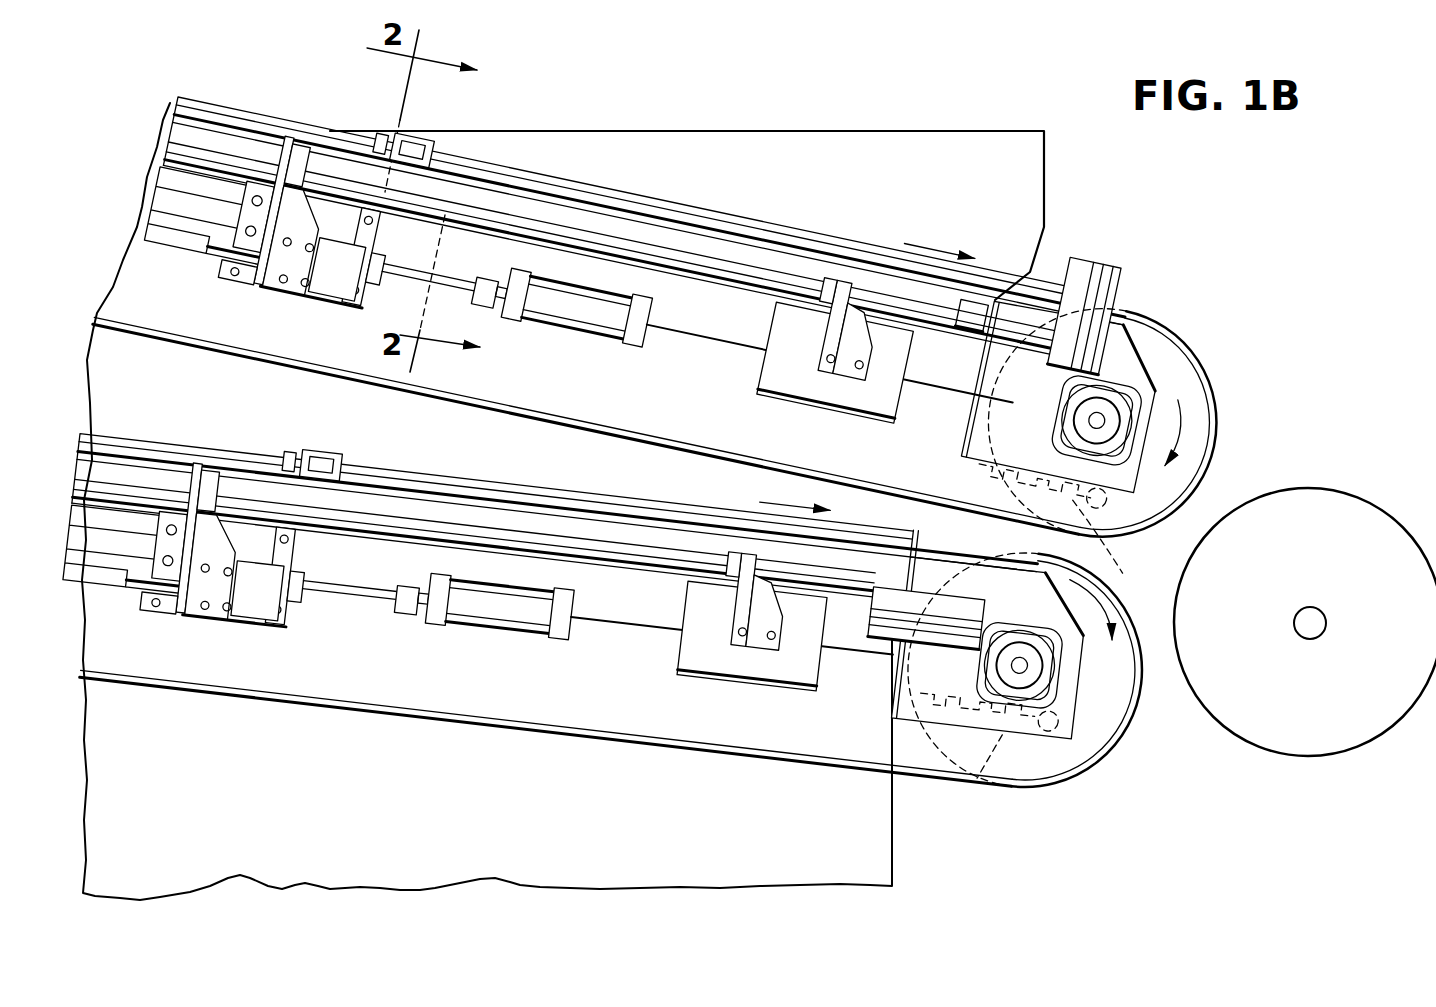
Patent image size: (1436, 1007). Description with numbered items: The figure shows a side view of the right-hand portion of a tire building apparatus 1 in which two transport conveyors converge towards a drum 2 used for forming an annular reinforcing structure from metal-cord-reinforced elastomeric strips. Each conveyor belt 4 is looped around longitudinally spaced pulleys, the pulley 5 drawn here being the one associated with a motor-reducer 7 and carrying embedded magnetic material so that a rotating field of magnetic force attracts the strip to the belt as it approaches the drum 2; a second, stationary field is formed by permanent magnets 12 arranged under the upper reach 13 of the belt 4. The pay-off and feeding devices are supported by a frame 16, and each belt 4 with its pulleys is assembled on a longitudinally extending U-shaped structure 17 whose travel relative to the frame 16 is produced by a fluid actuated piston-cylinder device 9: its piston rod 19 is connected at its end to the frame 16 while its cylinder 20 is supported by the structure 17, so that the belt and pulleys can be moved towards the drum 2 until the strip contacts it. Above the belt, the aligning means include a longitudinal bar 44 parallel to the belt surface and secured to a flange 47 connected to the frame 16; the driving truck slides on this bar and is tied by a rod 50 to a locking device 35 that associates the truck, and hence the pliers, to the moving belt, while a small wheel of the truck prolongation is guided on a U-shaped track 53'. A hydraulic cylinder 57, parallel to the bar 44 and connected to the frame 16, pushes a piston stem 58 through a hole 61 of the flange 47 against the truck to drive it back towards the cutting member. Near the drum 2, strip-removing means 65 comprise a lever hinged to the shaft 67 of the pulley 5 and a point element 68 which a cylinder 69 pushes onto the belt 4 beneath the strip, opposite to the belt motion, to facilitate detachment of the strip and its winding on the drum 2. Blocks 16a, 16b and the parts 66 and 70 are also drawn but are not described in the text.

The apparatus 1 is at (305, 116).
The drum 2 is at (1298, 573).
The conveyor belt 4 is at (155, 336).
The pulley 5 is at (1200, 414).
The motor-reducer 7 is at (1085, 268).
The fluid actuated piston-cylinder device 9 is at (545, 333).
The permanent magnets 12 is at (640, 207).
The upper reach 13 is at (737, 217).
The frame 16 is at (640, 130).
The mounting block 16a is at (835, 415).
The mounting block 16b is at (328, 305).
The U-shaped structure 17 is at (730, 310).
The piston rod 19 is at (446, 287).
The cylinder 20 is at (583, 326).
The locking device 35 is at (424, 128).
The longitudinal bar 44 is at (113, 466).
The flange 47 is at (268, 288).
The rod 50 is at (215, 105).
The U-shaped track 53' is at (181, 396).
The hydraulic cylinder 57 is at (600, 235).
The stem 58 is at (247, 150).
The hole 61 is at (272, 188).
The means for removing the strip 65 is at (1010, 488).
The idler pulley 66 is at (1177, 500).
The shaft 67 is at (1100, 421).
The point element 68 is at (1124, 547).
The cylinder 69 is at (1035, 462).
The drive belt 70 is at (1108, 568).